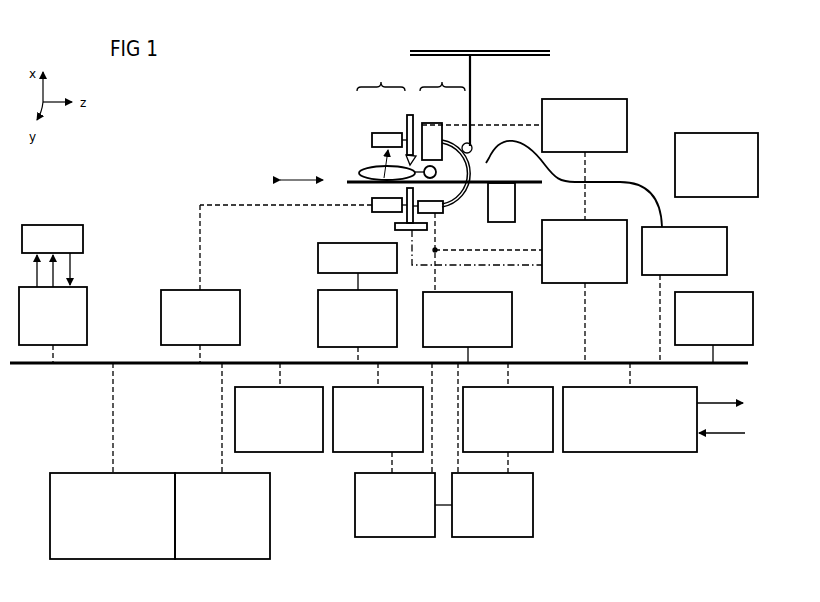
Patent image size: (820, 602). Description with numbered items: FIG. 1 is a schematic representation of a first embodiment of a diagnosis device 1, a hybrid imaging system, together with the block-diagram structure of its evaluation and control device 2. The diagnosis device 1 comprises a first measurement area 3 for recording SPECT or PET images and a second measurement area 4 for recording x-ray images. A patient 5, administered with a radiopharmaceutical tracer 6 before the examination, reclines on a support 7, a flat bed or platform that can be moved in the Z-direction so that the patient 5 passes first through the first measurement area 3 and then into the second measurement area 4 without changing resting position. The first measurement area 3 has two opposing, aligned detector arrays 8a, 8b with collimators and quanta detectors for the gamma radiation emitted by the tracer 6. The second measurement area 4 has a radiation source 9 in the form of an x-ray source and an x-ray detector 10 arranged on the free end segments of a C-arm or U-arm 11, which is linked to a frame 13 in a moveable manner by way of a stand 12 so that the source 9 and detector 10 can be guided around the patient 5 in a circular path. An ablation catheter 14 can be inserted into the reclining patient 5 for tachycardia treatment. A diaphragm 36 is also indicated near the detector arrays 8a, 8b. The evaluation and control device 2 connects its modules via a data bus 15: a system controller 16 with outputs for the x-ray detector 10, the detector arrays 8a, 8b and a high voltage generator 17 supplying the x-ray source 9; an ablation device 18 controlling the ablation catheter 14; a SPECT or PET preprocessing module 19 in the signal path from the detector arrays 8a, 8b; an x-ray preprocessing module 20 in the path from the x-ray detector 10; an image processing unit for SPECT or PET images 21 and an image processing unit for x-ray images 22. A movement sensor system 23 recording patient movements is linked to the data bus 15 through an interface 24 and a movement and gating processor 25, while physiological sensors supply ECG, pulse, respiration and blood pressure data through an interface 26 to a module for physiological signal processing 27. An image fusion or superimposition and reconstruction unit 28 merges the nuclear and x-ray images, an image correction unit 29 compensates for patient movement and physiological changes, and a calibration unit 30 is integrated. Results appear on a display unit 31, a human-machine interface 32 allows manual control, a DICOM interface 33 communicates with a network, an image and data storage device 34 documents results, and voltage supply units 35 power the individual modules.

The diagnosis device 1 is at (326, 79).
The evaluation and control device 2 is at (111, 203).
The first measurement area 3 is at (381, 77).
The second measurement area 4 is at (442, 77).
The patient 5 is at (357, 176).
The tracer 6 is at (382, 167).
The support 7 is at (531, 184).
The detector array 8a is at (372, 139).
The detector array 8b is at (376, 212).
The radiation source 9 is at (432, 124).
The x-ray detector 10 is at (438, 214).
The C-arm or U-arm 11 is at (471, 146).
The stand 12 is at (472, 78).
The frame 13 is at (524, 56).
The ablation catheter 14 is at (493, 152).
The data bus 15 is at (723, 366).
The system controller 16 is at (576, 259).
The high voltage generator 17 is at (576, 134).
The ablation device 18 is at (675, 259).
The SPECT or PET preprocessing module 19 is at (191, 325).
The x-ray preprocessing module 20 is at (459, 328).
The image processing unit for SPECT or PET images 21 is at (270, 427).
The image processing unit for x-ray images 22 is at (369, 427).
The movement sensor system 23 is at (408, 160).
The interface 24 is at (44, 247).
The movement and gating processor 25 is at (44, 324).
The interface 26 is at (349, 266).
The module for physiological signal processing 27 is at (349, 326).
The image fusion or superimposition and reconstruction unit 28 is at (499, 427).
The image correction unit 29 is at (483, 512).
The calibration unit 30 is at (386, 512).
The display unit 31 is at (103, 524).
The human-machine interface 32 is at (213, 524).
The DICOM interface 33 is at (621, 427).
The image and data storage device 34 is at (705, 327).
The voltage supply units 35 is at (707, 173).
The diaphragm 36 is at (410, 114).